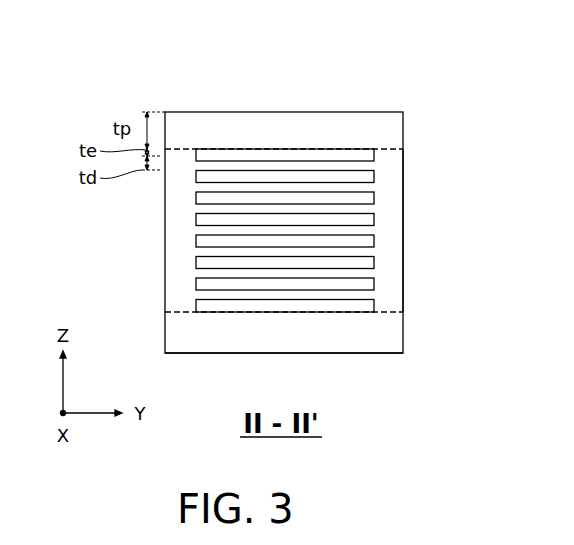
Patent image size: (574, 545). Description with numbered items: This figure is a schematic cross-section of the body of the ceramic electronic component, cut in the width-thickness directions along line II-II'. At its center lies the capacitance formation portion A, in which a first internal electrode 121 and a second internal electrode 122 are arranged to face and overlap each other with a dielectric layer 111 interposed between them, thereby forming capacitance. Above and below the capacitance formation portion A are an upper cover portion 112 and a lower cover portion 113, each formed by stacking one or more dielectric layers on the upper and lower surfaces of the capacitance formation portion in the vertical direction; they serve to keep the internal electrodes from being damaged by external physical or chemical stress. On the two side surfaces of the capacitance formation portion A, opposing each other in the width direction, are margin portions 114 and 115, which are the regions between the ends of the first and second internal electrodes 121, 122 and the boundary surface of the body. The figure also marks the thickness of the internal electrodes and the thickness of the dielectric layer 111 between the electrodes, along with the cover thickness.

The upper cover portion 112 is at (292, 128).
The first internal electrode 121 is at (375, 150).
The dielectric layer 111 is at (376, 160).
The second internal electrode 122 is at (376, 172).
The margin portion 115 is at (397, 258).
The lower cover portion 113 is at (397, 333).
The margin portion 114 is at (180, 268).
The capacitance formation portion A is at (196, 234).